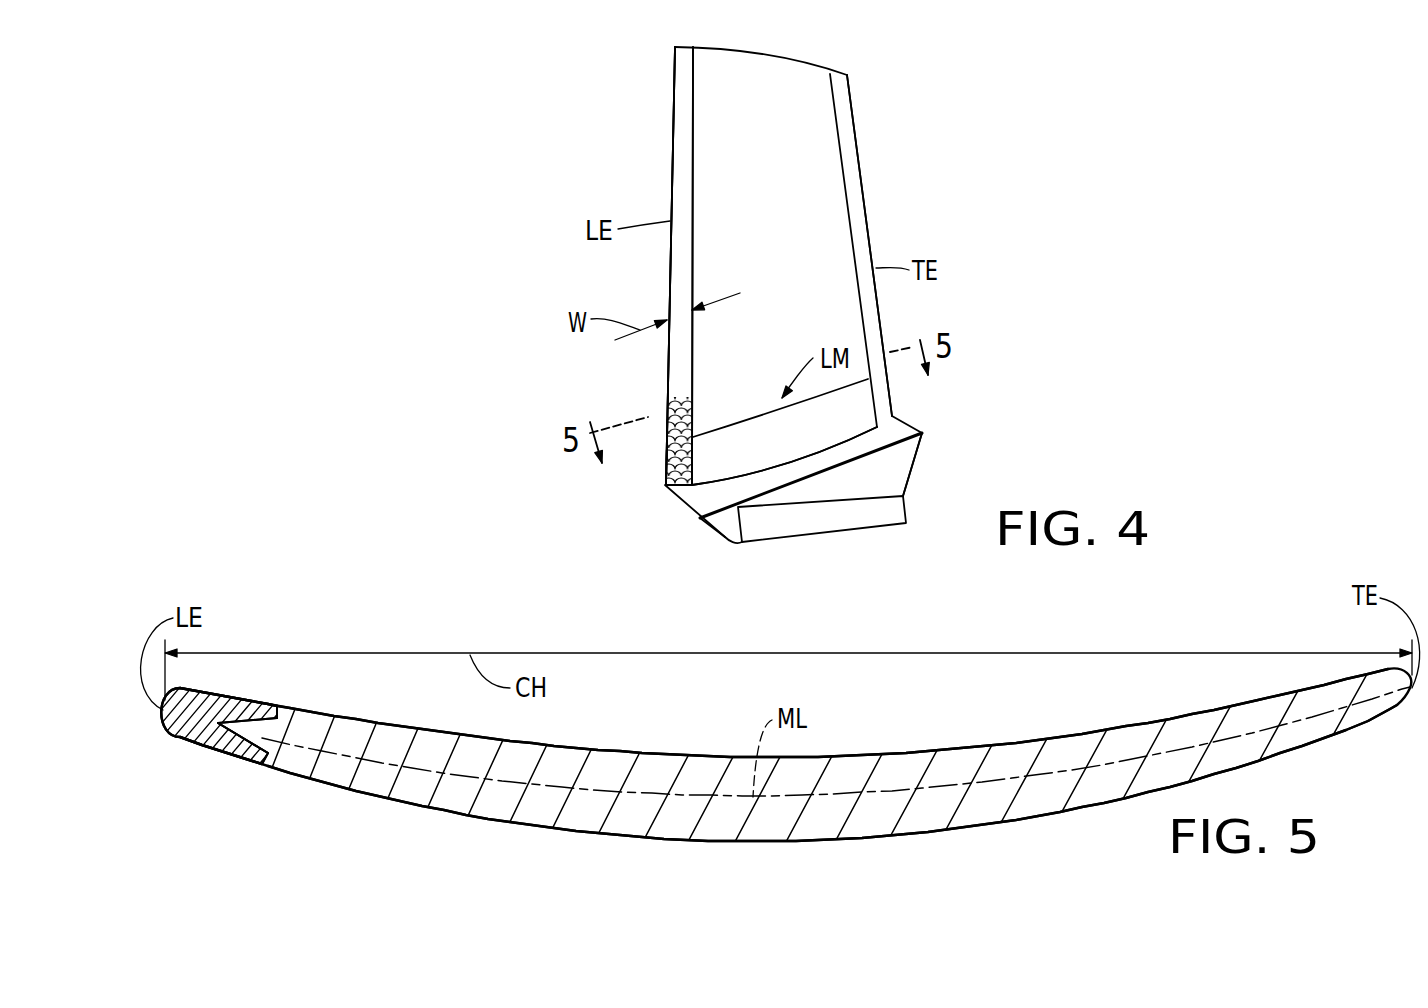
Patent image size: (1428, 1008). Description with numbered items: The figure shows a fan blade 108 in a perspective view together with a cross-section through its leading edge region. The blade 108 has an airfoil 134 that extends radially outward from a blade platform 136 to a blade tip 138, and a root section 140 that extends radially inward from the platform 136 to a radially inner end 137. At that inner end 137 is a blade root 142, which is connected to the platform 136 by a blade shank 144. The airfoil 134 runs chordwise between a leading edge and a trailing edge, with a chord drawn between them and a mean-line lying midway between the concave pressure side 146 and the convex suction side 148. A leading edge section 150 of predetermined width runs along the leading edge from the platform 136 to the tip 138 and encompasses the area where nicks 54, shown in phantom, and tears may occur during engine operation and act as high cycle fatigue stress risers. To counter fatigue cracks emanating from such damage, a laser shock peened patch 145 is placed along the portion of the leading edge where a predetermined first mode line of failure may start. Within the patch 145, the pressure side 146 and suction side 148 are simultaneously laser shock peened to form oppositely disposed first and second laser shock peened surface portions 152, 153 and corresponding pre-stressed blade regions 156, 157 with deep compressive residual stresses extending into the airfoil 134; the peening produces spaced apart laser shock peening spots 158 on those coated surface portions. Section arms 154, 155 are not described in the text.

In FIG. 4, the blade 108 is at (880, 67).
In FIG. 5, the blade 108 is at (855, 745).
In FIG. 4, the airfoil 134 is at (809, 263).
In FIG. 4, the blade platform 136 is at (898, 428).
In FIG. 4, the radially inner end 137 is at (903, 492).
In FIG. 4, the blade tip 138 is at (763, 55).
In FIG. 4, the root section 140 is at (860, 468).
In FIG. 4, the blade root 142 is at (723, 530).
In FIG. 4, the blade shank 144 is at (905, 468).
In FIG. 4, the laser shock peened patch 145 is at (668, 464).
In FIG. 5, the pressure side 146 is at (578, 747).
In FIG. 5, the suction side 148 is at (478, 817).
In FIG. 4, the leading edge section 150 is at (693, 352).
In FIG. 5, the leading edge section 150 is at (163, 723).
In FIG. 5, the first laser shock peened surface portion 152 is at (217, 690).
In FIG. 4, the second laser shock peened surface portion 153 is at (692, 467).
In FIG. 5, the second laser shock peened surface portion 153 is at (213, 747).
In FIG. 5, the first arm of sheath 154 is at (230, 697).
In FIG. 5, the second arm of sheath 155 is at (225, 747).
In FIG. 5, the pre-stressed blade region 156 is at (263, 708).
In FIG. 5, the pre-stressed blade region 157 is at (232, 750).
In FIG. 4, the laser shock peening spots 158 is at (690, 410).
In FIG. 4, the nicks 54 is at (673, 448).